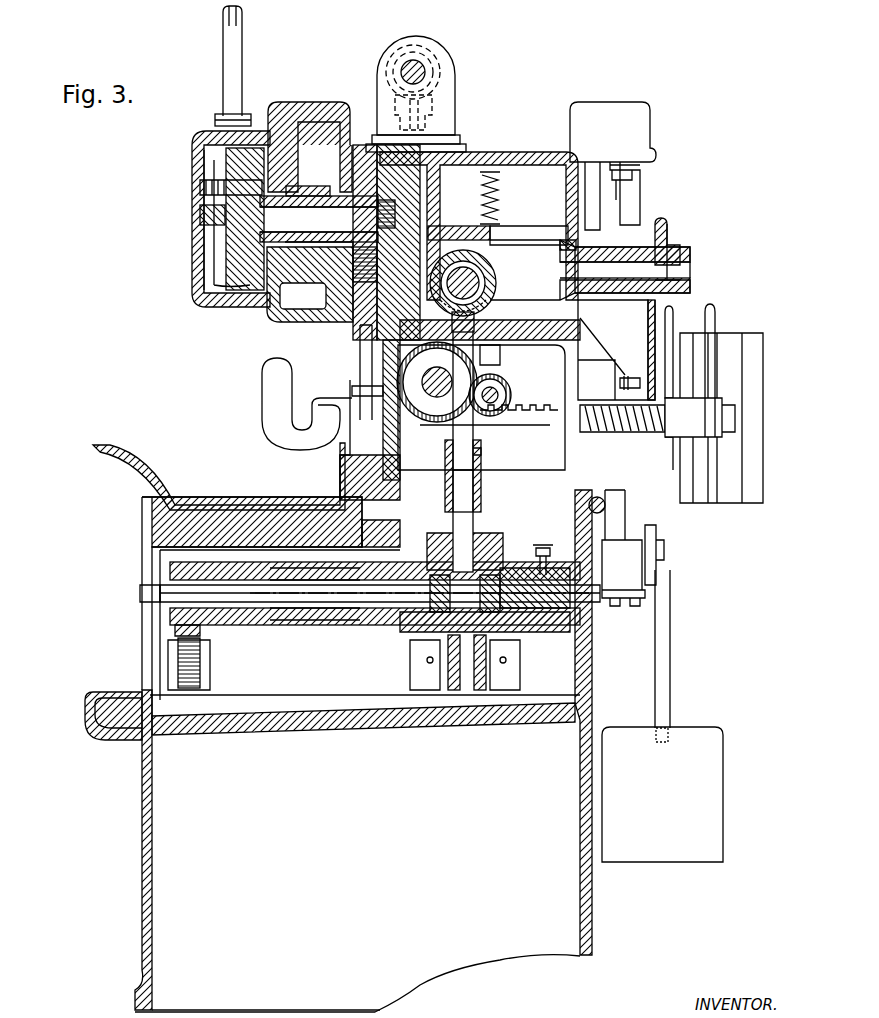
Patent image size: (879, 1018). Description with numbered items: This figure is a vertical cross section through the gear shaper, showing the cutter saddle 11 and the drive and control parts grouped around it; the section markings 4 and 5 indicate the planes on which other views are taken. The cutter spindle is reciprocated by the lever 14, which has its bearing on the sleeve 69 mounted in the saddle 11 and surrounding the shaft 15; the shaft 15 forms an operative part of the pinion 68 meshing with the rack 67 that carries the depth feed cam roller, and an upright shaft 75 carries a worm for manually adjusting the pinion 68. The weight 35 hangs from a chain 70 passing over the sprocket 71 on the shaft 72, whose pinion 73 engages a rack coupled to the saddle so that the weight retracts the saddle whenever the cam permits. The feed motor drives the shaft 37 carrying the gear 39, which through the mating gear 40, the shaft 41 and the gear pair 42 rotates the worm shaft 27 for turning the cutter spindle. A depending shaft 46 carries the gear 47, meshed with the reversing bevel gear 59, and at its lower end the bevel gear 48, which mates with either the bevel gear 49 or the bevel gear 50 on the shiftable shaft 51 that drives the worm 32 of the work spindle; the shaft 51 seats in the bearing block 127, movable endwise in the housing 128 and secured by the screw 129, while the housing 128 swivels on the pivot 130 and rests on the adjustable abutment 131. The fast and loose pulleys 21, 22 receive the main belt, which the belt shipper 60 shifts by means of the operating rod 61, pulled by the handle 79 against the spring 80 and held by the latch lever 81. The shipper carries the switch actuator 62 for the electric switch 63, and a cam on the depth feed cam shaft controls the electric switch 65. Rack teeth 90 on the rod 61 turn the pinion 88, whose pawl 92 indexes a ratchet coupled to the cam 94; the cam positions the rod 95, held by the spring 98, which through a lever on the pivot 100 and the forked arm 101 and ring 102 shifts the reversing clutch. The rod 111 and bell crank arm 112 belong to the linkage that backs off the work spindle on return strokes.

The pulley / section line 4- 4 is at (758, 503).
The pulley groove 5 is at (705, 503).
The cutter saddle 11 is at (312, 122).
The lever 14 is at (298, 180).
The shaft 15 is at (235, 220).
The fast pulley 21 is at (678, 340).
The loose pulley 22 is at (758, 340).
The worm shaft 27 is at (428, 66).
The worm 32 is at (318, 622).
The weight 35 is at (710, 740).
The shaft 37 is at (388, 436).
The gear 39 is at (430, 400).
The mating gear 40 is at (380, 325).
The shaft 41 is at (432, 195).
The gear pair 42 is at (440, 82).
The depending shaft 46 is at (470, 465).
The gear 47 is at (474, 324).
The bevel gear 48 is at (478, 535).
The bevel gear 49 is at (415, 620).
The bevel gear 50 is at (505, 615).
The shaft 51 is at (152, 605).
The bevel gear 59 is at (497, 290).
The belt shipper 60 is at (716, 312).
The operating rod 61 is at (548, 437).
The switch actuator 62 is at (632, 378).
The electric switch 63 is at (626, 375).
The electric switch 65 is at (628, 106).
The rack 67 is at (380, 262).
The pinion 68 is at (372, 211).
The sleeve 69 is at (322, 186).
The chain 70 is at (660, 548).
The sprocket 71 is at (670, 232).
The shaft 72 is at (540, 290).
The pinion 73 is at (342, 292).
The upright shaft 75 is at (243, 50).
The handle 79 is at (262, 385).
The spring 80 is at (594, 428).
The latch lever 81 is at (356, 375).
The pinion 88 is at (520, 404).
The rack teeth 90 is at (508, 437).
The pawl 92 is at (505, 362).
The cam 94 is at (512, 386).
The rod 95 is at (500, 240).
The spring 98 is at (500, 195).
The pivot 100 is at (456, 213).
The forked arm 101 is at (555, 233).
The ring 102 is at (490, 306).
The rod 111 is at (620, 522).
The bell crank arm 112 is at (640, 575).
The bearing block 127 is at (560, 610).
The housing 128 is at (360, 625).
The screw 129 is at (548, 545).
The pivot 130 is at (430, 672).
The adjustable abutment 131 is at (205, 662).